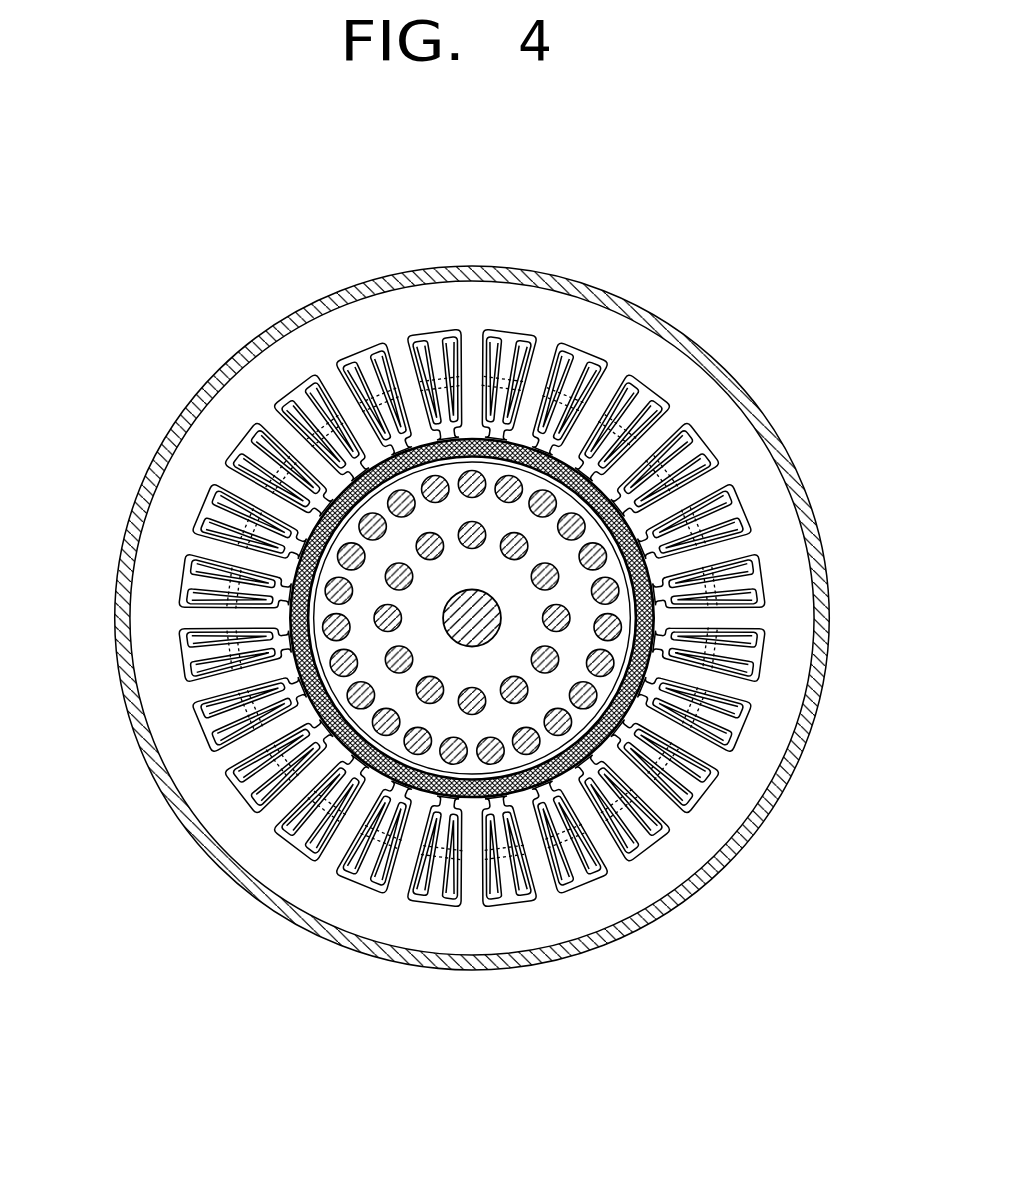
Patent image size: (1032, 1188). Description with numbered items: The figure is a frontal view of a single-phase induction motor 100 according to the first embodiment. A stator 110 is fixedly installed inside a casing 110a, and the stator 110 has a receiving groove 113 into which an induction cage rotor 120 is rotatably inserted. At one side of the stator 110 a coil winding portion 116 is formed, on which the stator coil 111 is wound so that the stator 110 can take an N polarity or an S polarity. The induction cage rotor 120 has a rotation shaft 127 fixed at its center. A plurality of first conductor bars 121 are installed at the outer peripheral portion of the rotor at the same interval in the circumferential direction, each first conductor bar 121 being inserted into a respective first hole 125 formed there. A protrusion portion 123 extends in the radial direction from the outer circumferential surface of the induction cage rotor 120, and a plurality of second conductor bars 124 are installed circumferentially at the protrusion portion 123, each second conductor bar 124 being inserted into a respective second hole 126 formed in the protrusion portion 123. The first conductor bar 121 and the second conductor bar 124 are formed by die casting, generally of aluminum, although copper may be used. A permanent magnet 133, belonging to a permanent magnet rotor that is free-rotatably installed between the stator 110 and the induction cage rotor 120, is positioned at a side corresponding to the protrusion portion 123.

The single-phase induction motor 100 is at (198, 321).
The stator 110 is at (177, 481).
The casing 110a is at (413, 952).
The stator coil 111 is at (335, 427).
The receiving groove 113 is at (656, 672).
The coil winding portion 116 is at (196, 636).
The induction cage rotor 120 is at (313, 727).
The first conductor bar 121 is at (558, 575).
The protrusion portion 123 is at (612, 610).
The second conductor bar 124 is at (584, 522).
The first hole 125 is at (332, 588).
The second hole 126 is at (412, 752).
The rotation shaft 127 is at (453, 623).
The permanent magnet 133 is at (415, 676).